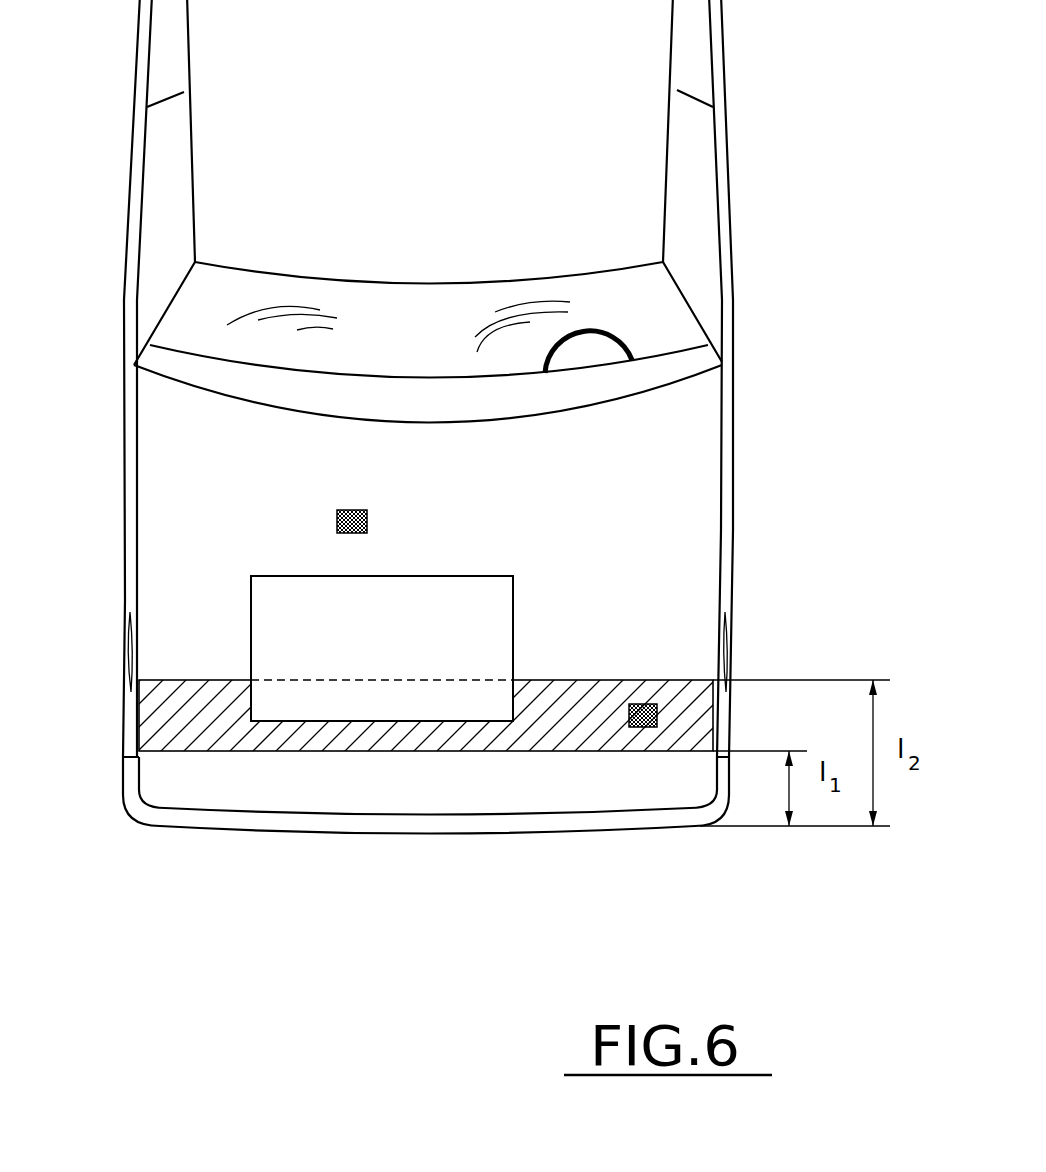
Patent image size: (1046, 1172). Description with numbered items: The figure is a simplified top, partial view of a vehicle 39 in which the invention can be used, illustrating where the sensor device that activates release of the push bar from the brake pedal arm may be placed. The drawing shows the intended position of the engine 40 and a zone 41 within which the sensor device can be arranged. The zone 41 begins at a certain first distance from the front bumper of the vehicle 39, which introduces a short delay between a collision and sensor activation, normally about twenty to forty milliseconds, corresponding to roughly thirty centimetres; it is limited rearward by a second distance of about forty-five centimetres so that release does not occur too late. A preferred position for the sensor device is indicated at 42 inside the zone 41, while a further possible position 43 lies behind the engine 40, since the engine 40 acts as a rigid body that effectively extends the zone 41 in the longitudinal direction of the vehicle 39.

The vehicle 39 is at (222, 180).
The engine 40 is at (272, 637).
The zone 41 is at (187, 738).
The preferred position for a sensor device 42 is at (643, 705).
The further possible position for the sensor device 43 is at (337, 518).